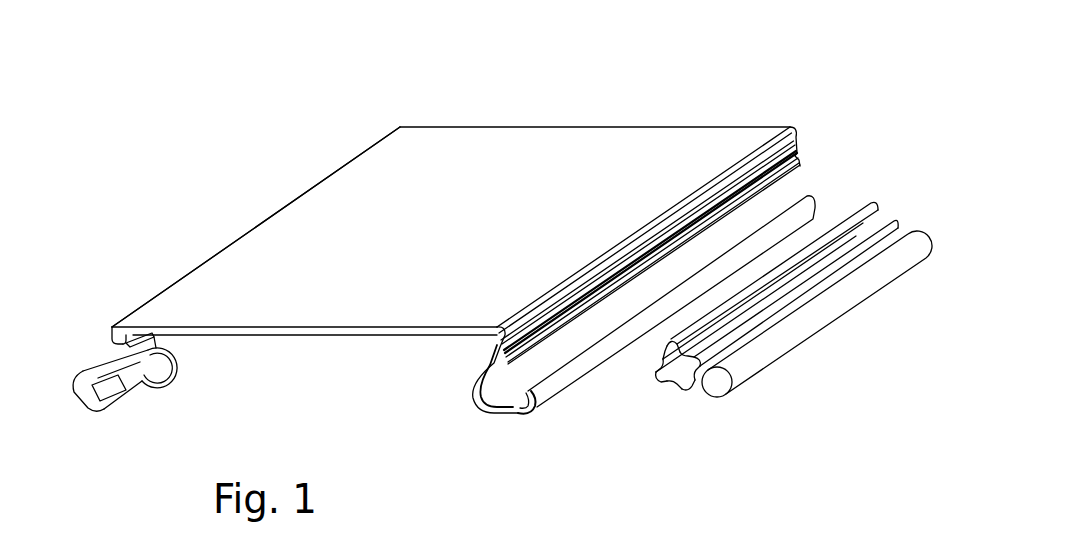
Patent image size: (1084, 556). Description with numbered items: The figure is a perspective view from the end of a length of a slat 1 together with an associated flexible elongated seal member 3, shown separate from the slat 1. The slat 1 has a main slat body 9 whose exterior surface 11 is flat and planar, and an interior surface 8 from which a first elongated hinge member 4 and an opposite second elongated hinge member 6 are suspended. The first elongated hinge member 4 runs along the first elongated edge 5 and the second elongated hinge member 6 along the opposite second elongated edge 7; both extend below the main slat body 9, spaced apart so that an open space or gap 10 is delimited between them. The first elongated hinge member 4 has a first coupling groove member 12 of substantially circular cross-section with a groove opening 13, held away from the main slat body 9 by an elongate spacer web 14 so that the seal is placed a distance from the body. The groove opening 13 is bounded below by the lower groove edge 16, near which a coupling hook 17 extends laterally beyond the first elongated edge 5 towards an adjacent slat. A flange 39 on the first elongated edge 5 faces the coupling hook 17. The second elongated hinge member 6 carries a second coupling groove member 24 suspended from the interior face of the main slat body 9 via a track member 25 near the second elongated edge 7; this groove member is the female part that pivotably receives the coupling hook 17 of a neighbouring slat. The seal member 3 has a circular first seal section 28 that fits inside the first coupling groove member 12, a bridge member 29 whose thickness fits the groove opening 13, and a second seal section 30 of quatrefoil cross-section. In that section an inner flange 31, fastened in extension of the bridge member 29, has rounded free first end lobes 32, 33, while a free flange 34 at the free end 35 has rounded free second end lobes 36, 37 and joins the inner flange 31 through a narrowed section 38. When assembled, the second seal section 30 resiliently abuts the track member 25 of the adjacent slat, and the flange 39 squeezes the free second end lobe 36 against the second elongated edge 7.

The slat 1 is at (606, 104).
The flexible elongated seal member 3 is at (888, 203).
The first elongated hinge member 4 is at (142, 412).
The first elongated edge 5 is at (232, 243).
The second elongated hinge member 6 is at (489, 428).
The second elongated edge 7 is at (757, 152).
The interior surface 8 is at (345, 337).
The main slat body 9 is at (337, 193).
The open space or gap 10 is at (297, 373).
The exterior surface 11 is at (412, 148).
The first coupling groove member 12 is at (160, 372).
The groove opening 13 is at (120, 340).
The elongate spacer web 14 is at (150, 340).
The lower groove edge 16 is at (128, 362).
The coupling hook 17 is at (97, 402).
The second coupling groove member 24 is at (517, 410).
The track member 25 is at (497, 332).
The first seal section 28 is at (797, 340).
The bridge member 29 is at (705, 395).
The second seal section 30 is at (852, 228).
The inner flange 31 is at (685, 392).
The free first end lobe 32 is at (688, 392).
The free first end lobe 33 is at (692, 350).
The free flange 34 is at (667, 364).
The free end 35 is at (660, 382).
The free second end lobe 36 is at (672, 345).
The free second end lobe 37 is at (655, 374).
The narrowed section 38 is at (675, 388).
The flange 39 is at (113, 332).